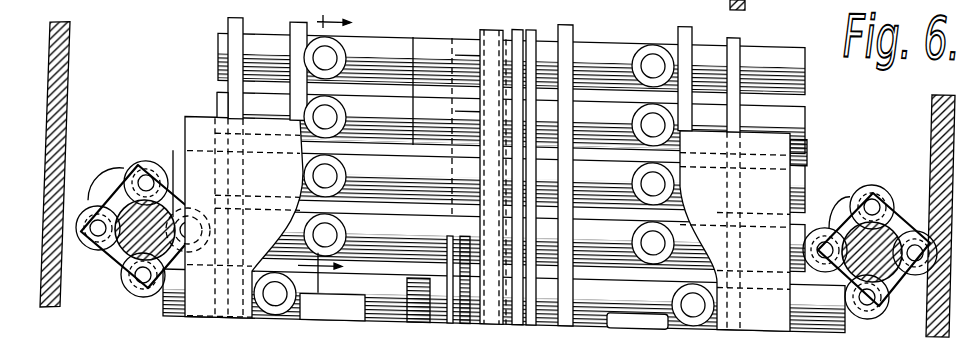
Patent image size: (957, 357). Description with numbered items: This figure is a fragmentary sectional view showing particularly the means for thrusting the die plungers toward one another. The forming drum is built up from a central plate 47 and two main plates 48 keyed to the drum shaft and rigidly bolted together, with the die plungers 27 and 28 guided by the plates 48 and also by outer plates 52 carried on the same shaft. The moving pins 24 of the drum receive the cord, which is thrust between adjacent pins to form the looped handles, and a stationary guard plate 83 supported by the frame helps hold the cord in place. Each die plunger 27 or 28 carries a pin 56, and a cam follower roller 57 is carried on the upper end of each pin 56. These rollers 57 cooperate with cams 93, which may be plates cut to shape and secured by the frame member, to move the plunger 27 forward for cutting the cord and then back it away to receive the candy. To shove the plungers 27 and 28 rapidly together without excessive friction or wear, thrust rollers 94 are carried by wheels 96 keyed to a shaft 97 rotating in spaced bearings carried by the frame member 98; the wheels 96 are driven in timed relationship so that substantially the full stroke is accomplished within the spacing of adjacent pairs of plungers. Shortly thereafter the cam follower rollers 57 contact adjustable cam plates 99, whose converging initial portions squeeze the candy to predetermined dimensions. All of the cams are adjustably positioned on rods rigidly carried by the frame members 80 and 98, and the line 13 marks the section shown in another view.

The section line 13 is at (308, 149).
The pins 24 is at (446, 127).
The die plunger 27 is at (218, 93).
The die plunger 28 is at (800, 148).
The central plate 47 is at (498, 151).
The main plates 48 is at (405, 95).
The outer plates 52 is at (228, 14).
The pins 56 is at (318, 46).
The cam follower roller 57 is at (345, 42).
The frame member 80 is at (70, 45).
The guard plate 83 is at (470, 308).
The cams 93 is at (186, 112).
The thrust rollers 94 is at (126, 162).
The wheels 96 is at (120, 247).
The shaft 97 is at (848, 197).
The frame member 98 is at (936, 92).
The adjustable cam plates 99 is at (292, 26).